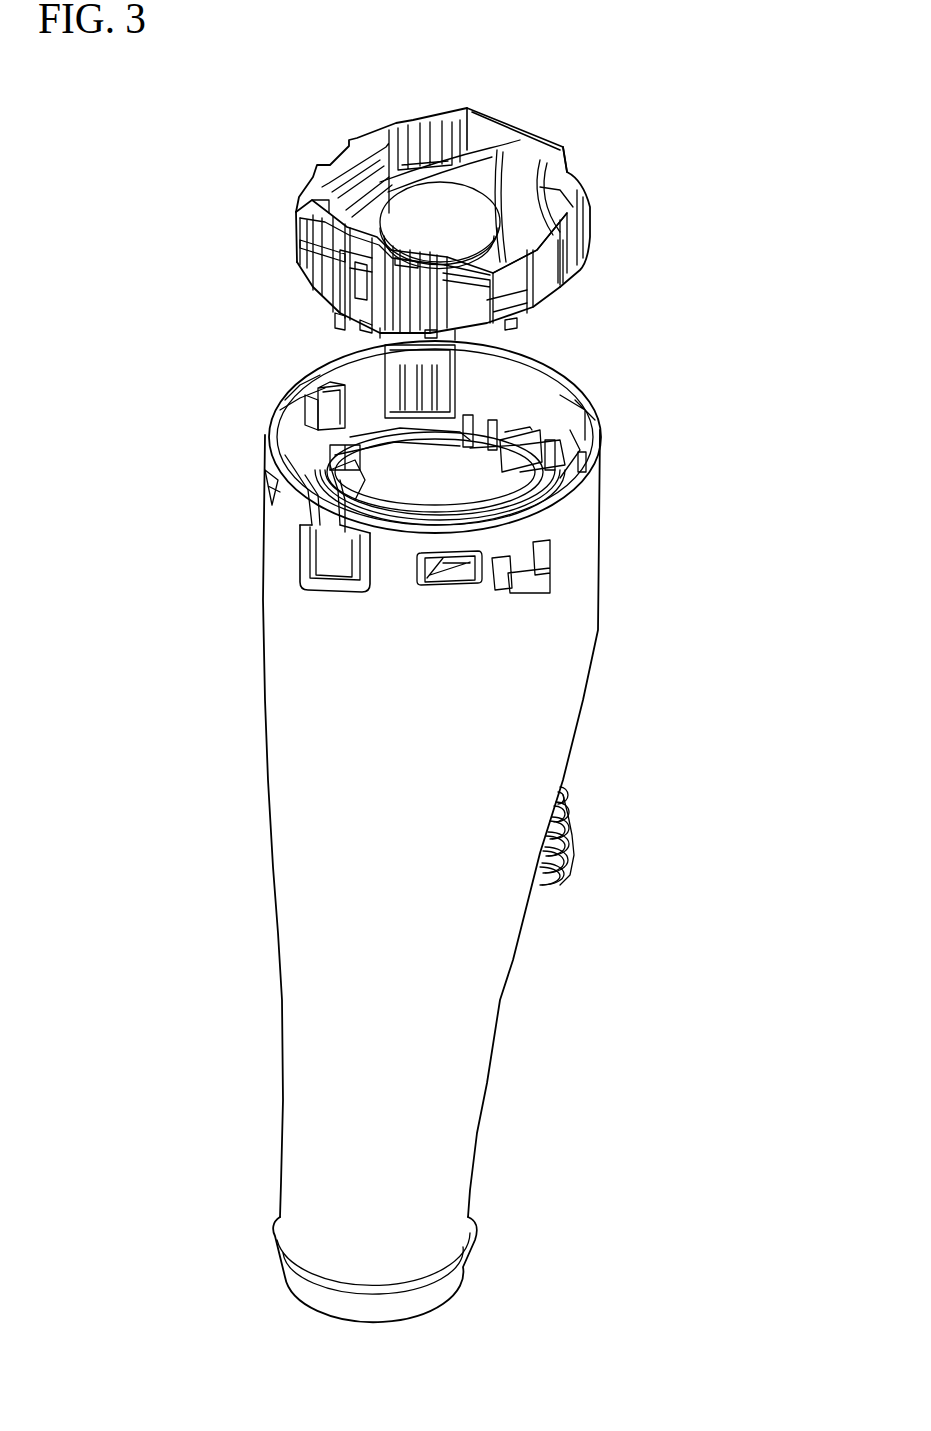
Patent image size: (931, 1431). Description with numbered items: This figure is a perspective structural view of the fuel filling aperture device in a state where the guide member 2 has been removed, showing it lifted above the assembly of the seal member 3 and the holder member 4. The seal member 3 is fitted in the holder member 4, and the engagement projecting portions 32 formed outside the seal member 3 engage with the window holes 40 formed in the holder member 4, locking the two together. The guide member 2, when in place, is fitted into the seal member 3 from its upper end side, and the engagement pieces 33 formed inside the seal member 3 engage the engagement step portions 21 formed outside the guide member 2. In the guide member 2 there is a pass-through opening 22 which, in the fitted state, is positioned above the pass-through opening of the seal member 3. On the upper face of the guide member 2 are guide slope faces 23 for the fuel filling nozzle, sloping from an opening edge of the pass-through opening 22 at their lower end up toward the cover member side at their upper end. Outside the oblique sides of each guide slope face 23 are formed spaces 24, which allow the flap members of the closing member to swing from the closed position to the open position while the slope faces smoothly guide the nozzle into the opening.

The guide member 2 is at (475, 181).
The engagement step portions 21 is at (557, 293).
The pass-through opening 22 is at (417, 228).
The guide slope faces 23 is at (487, 158).
The spaces 24 is at (440, 122).
The seal member 3 is at (533, 430).
The engagement projecting portions 32 is at (455, 573).
The engagement pieces 33 is at (330, 408).
The holder member 4 is at (453, 940).
The window holes 40 is at (425, 585).